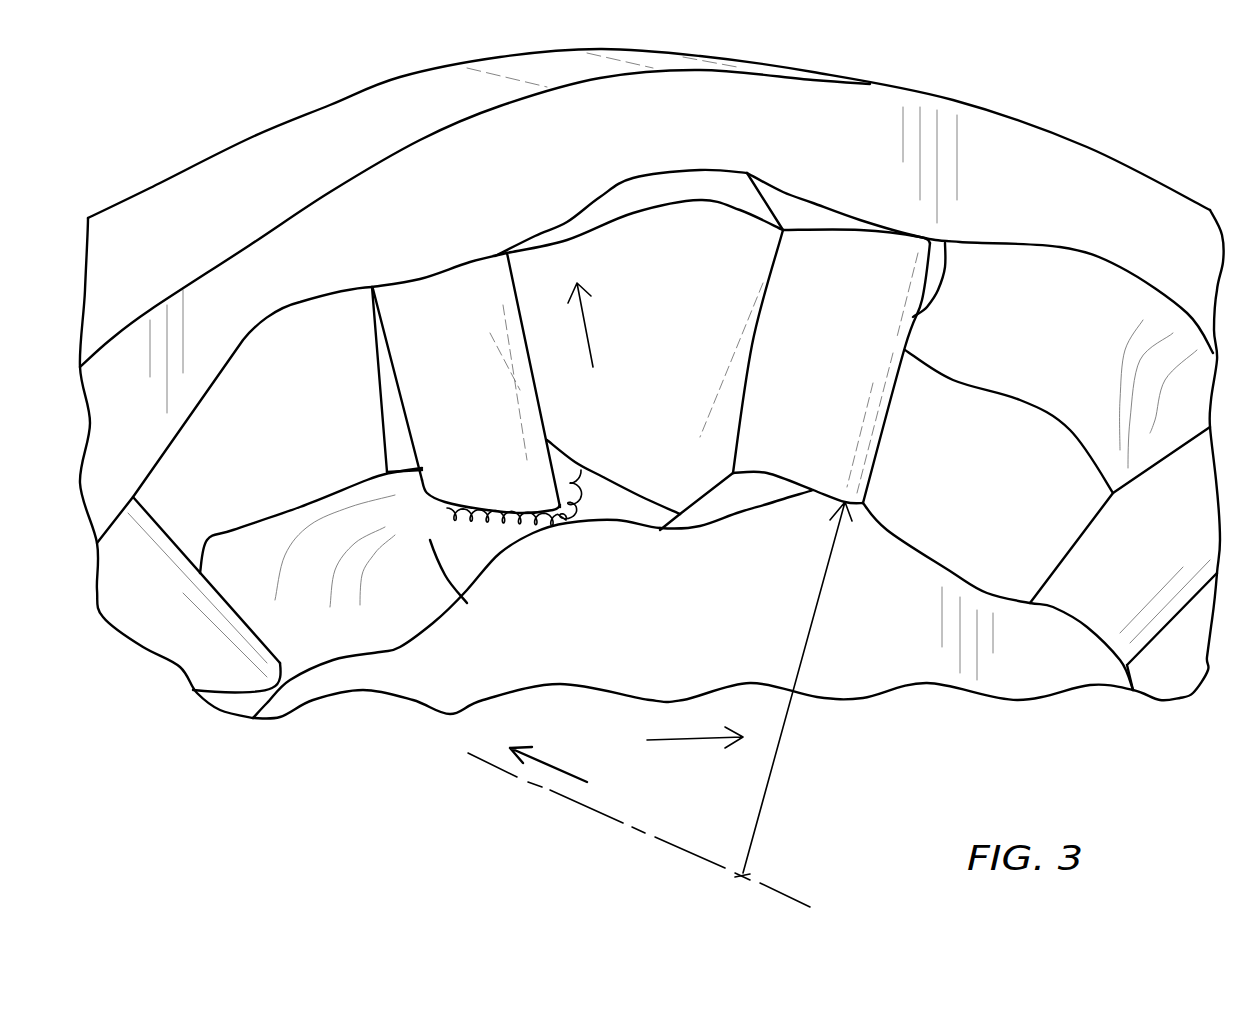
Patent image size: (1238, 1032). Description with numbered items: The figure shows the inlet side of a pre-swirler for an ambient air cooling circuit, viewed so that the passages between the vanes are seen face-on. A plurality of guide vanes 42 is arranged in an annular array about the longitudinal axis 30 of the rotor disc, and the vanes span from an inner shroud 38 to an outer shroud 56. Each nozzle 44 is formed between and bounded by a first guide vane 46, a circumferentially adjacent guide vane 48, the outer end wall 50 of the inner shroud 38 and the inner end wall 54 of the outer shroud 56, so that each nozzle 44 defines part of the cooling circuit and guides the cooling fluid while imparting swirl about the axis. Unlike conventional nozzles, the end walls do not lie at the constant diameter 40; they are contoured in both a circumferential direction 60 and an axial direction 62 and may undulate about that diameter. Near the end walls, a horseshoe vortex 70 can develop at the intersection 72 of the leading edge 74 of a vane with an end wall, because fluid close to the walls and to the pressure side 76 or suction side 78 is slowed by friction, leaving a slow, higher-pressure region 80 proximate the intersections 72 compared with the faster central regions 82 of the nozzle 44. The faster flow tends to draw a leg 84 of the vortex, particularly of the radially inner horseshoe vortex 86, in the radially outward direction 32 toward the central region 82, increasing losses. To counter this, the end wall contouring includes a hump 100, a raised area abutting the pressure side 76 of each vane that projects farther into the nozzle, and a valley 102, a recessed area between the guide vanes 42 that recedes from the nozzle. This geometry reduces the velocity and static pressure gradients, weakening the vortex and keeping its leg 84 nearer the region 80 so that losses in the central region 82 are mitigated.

The longitudinal axis 30 is at (672, 845).
The radially outward direction 32 is at (587, 317).
The inner shroud 38 is at (632, 619).
The constant diameter 40 is at (813, 617).
The guide vanes 42 is at (439, 401).
The nozzles 44 is at (244, 436).
The first guide vane 46 is at (422, 349).
The circumferentially adjacent guide vane 48 is at (795, 334).
The outer end wall 50 is at (690, 532).
The inner end wall 54 is at (612, 190).
The outer shroud 56 is at (747, 134).
The circumferential direction 60 is at (697, 740).
The axial direction 62 is at (543, 758).
The horseshoe vortex 70 is at (490, 537).
The intersection 72 is at (490, 253).
The leading edge 74 is at (530, 402).
The pressure side 76 is at (160, 523).
The suction side 78 is at (413, 368).
The region proximate the intersections 80 is at (465, 296).
The central regions 82 is at (302, 459).
The leg 84 is at (600, 483).
The radially inner horseshoe vortex 86 is at (670, 522).
The hump 100 is at (563, 467).
The valley 102 is at (700, 190).